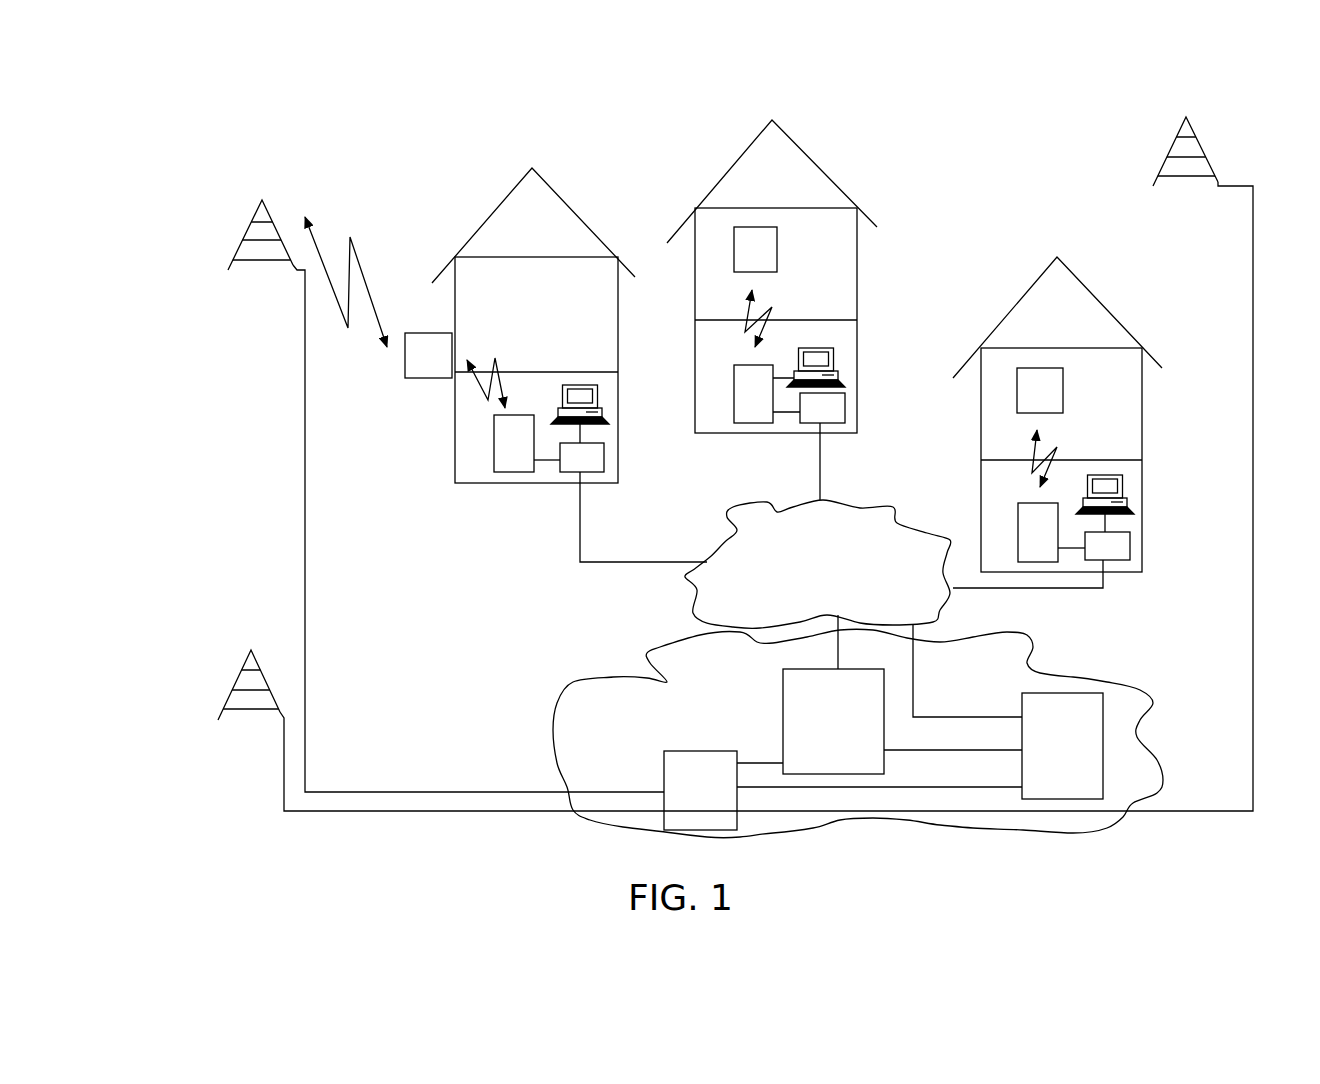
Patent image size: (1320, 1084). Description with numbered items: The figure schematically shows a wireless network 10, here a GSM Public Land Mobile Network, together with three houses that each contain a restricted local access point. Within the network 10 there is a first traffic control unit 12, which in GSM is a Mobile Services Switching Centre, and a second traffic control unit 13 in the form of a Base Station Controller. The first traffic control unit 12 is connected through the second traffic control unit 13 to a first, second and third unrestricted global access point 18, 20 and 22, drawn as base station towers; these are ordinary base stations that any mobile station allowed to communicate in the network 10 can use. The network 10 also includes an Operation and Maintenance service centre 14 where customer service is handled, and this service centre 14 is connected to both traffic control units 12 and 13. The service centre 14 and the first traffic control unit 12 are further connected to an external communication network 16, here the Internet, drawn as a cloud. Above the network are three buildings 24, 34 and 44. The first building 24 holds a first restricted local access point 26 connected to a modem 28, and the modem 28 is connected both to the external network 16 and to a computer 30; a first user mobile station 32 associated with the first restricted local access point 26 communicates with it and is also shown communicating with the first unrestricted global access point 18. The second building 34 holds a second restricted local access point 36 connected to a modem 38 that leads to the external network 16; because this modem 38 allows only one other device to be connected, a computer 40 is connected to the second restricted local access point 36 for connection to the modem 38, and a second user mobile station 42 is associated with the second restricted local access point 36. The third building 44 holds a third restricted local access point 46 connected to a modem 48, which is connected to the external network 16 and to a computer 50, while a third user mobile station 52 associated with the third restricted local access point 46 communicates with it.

The network 10 is at (550, 732).
The first traffic control unit 12 is at (902, 721).
The second traffic control unit 13 is at (843, 790).
The Operation and Maintenance service centre 14 is at (1062, 746).
The external communication network 16 is at (853, 608).
The first unrestricted global access point 18 is at (245, 235).
The second unrestricted global access point 20 is at (233, 690).
The third unrestricted global access point 22 is at (1167, 176).
The first building 24 is at (618, 295).
The first restricted local access point 26 is at (527, 443).
The modem 28 is at (633, 502).
The computer 30 is at (581, 390).
The first user mobile station 32 is at (455, 370).
The second building 34 is at (858, 245).
The second restricted local access point 36 is at (767, 394).
The modem 38 is at (822, 446).
The computer 40 is at (820, 348).
The second user mobile station 42 is at (755, 287).
The third building 44 is at (1142, 405).
The third restricted local access point 46 is at (1051, 532).
The modem 48 is at (1041, 560).
The computer 50 is at (1110, 475).
The third user mobile station 52 is at (1040, 427).